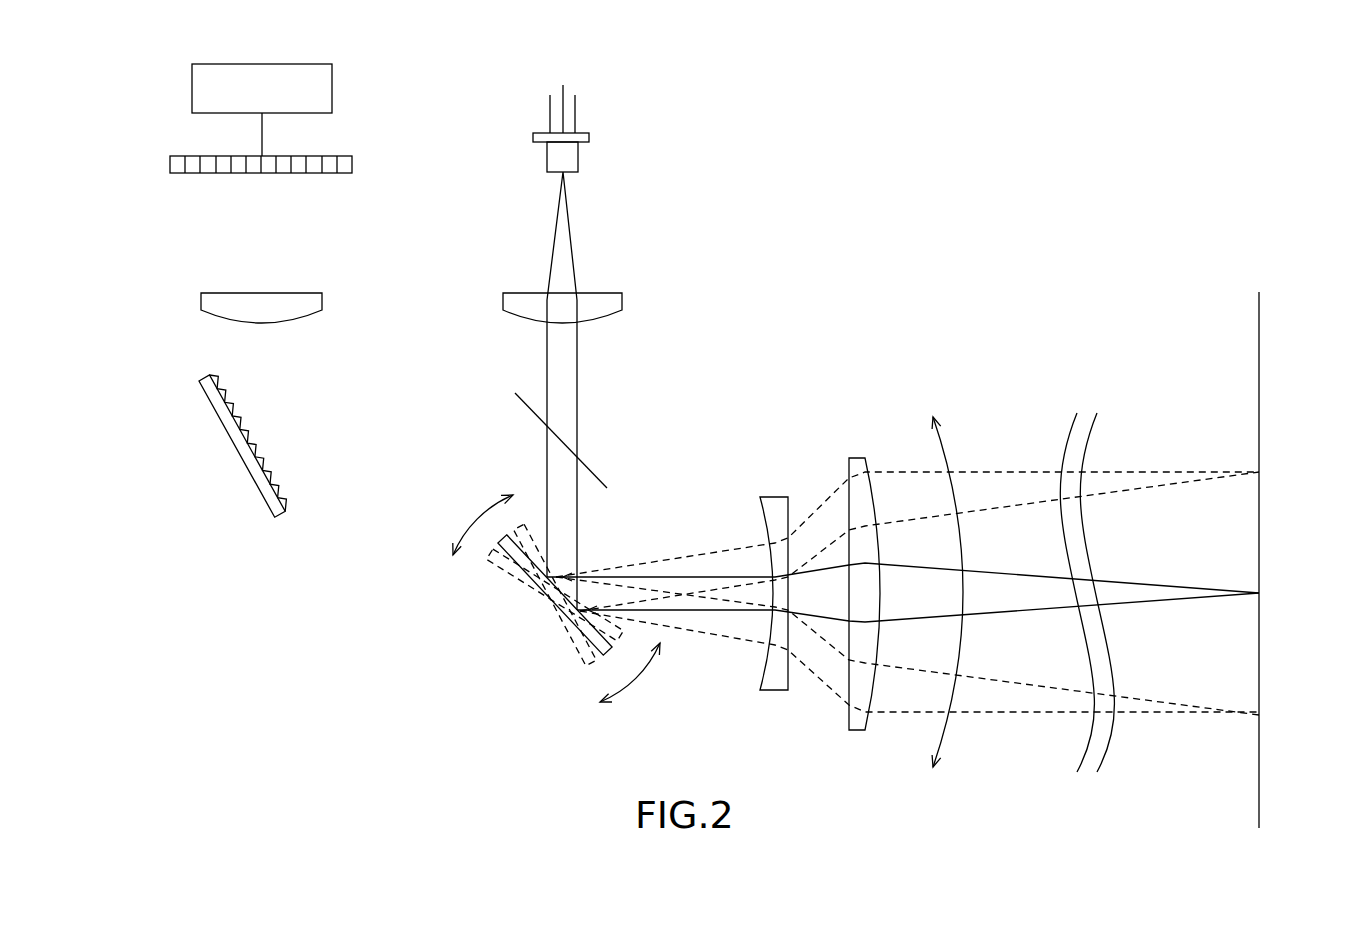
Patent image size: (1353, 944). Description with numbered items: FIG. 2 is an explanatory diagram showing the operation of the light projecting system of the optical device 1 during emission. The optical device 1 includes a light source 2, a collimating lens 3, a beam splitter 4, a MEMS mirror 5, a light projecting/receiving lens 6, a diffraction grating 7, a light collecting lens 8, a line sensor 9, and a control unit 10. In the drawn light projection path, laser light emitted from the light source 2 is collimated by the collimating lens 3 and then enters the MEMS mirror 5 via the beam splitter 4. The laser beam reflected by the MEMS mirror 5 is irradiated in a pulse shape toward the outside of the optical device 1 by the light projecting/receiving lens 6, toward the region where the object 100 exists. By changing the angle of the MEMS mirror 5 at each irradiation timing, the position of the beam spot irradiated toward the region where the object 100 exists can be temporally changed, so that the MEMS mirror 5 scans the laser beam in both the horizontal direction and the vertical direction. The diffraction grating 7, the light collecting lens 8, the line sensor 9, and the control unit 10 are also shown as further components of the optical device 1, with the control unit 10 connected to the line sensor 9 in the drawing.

The optical device 1 is at (935, 197).
The light source 2 is at (578, 158).
The collimating lens 3 is at (622, 300).
The beam splitter 4 is at (598, 472).
The MEMS mirror 5 is at (578, 642).
The light projecting/receiving lens 6 is at (872, 447).
The diffraction grating 7 is at (241, 463).
The light collecting lens 8 is at (322, 301).
The line sensor 9 is at (352, 164).
The control unit 10 is at (332, 93).
The object 100 is at (1261, 296).